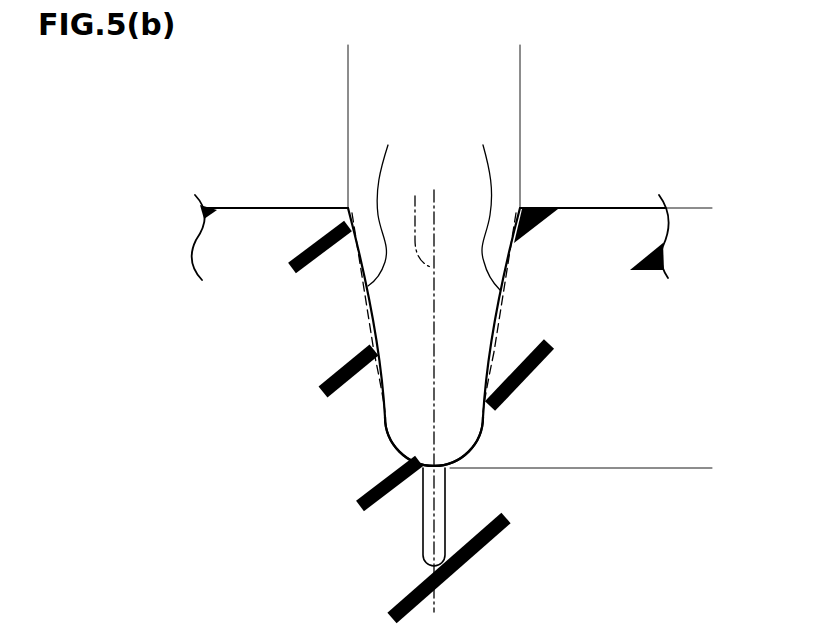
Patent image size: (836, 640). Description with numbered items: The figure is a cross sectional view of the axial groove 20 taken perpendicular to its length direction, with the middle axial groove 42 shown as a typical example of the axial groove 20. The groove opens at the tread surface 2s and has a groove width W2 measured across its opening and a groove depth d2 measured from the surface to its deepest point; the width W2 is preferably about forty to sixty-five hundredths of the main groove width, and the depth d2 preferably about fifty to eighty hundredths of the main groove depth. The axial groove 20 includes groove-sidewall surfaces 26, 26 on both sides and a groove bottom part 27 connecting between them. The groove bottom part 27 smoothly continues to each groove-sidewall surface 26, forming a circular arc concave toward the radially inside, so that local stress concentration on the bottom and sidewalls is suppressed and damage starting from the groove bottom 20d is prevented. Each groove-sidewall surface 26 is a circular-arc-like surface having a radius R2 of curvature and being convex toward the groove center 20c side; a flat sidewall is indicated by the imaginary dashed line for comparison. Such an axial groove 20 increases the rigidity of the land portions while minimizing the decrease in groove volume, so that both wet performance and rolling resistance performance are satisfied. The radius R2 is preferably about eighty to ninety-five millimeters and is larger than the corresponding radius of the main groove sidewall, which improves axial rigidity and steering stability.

The surface of substrate 2s is at (594, 207).
The axial groove 20 is at (505, 122).
The middle axial groove 42 is at (434, 441).
The groove-sidewall surface 26 is at (434, 203).
The groove bottom part 27 is at (448, 455).
The groove center 20c is at (421, 219).
The groove bottom 20d is at (427, 450).
The groove width W2 is at (518, 51).
The groove depth d2 is at (708, 209).
The radius of curvature R2 is at (375, 326).